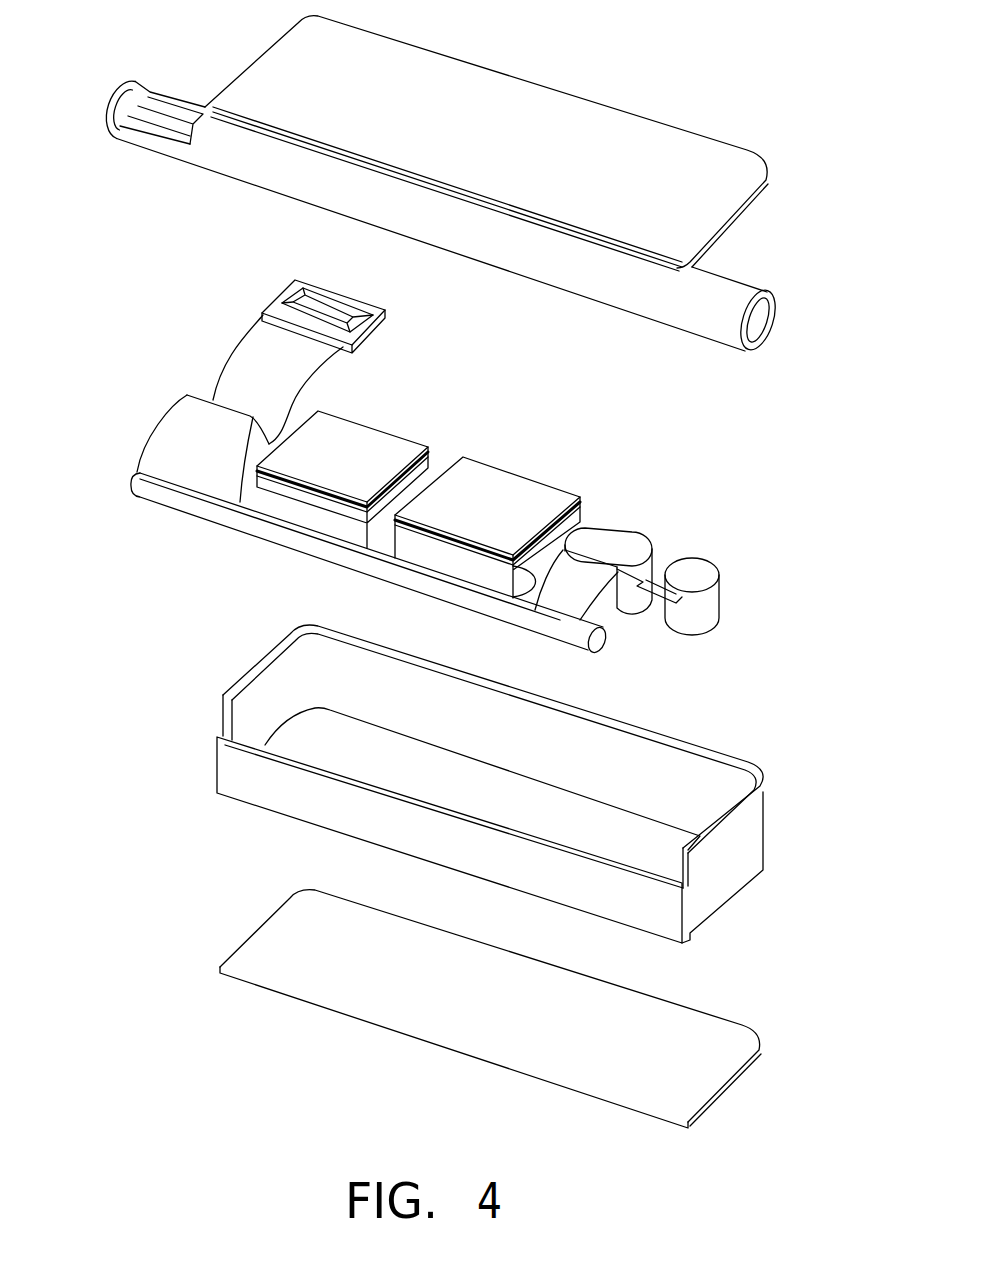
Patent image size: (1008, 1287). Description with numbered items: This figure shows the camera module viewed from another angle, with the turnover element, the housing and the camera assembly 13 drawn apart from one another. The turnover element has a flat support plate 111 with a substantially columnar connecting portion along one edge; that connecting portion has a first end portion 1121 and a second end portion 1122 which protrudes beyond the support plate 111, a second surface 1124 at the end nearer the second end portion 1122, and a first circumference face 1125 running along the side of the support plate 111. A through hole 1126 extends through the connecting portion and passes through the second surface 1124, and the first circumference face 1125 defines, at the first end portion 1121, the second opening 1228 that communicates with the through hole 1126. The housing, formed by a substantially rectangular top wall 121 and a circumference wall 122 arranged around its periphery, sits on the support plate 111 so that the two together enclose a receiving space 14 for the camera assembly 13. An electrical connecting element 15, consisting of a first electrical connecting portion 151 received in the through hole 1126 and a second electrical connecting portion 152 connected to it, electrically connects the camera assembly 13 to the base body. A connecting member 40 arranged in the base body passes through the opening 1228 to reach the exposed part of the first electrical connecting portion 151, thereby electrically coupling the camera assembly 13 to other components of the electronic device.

The support plate 111 is at (507, 100).
The first end portion 1121 is at (124, 160).
The second end portion 1122 is at (731, 368).
The second surface 1124 is at (768, 333).
The first circumference face 1125 is at (287, 168).
The through hole 1126 is at (171, 121).
The slot 1228 is at (156, 100).
The connecting member 40 is at (240, 373).
The electrical connecting element 15 is at (246, 597).
The first electrical connecting portion 151 is at (165, 497).
The second electrical connecting portion 152 is at (567, 595).
The camera assembly 13 is at (660, 472).
The receiving space 14 is at (603, 803).
The circumference wall 122 is at (262, 787).
The top wall 121 is at (312, 972).